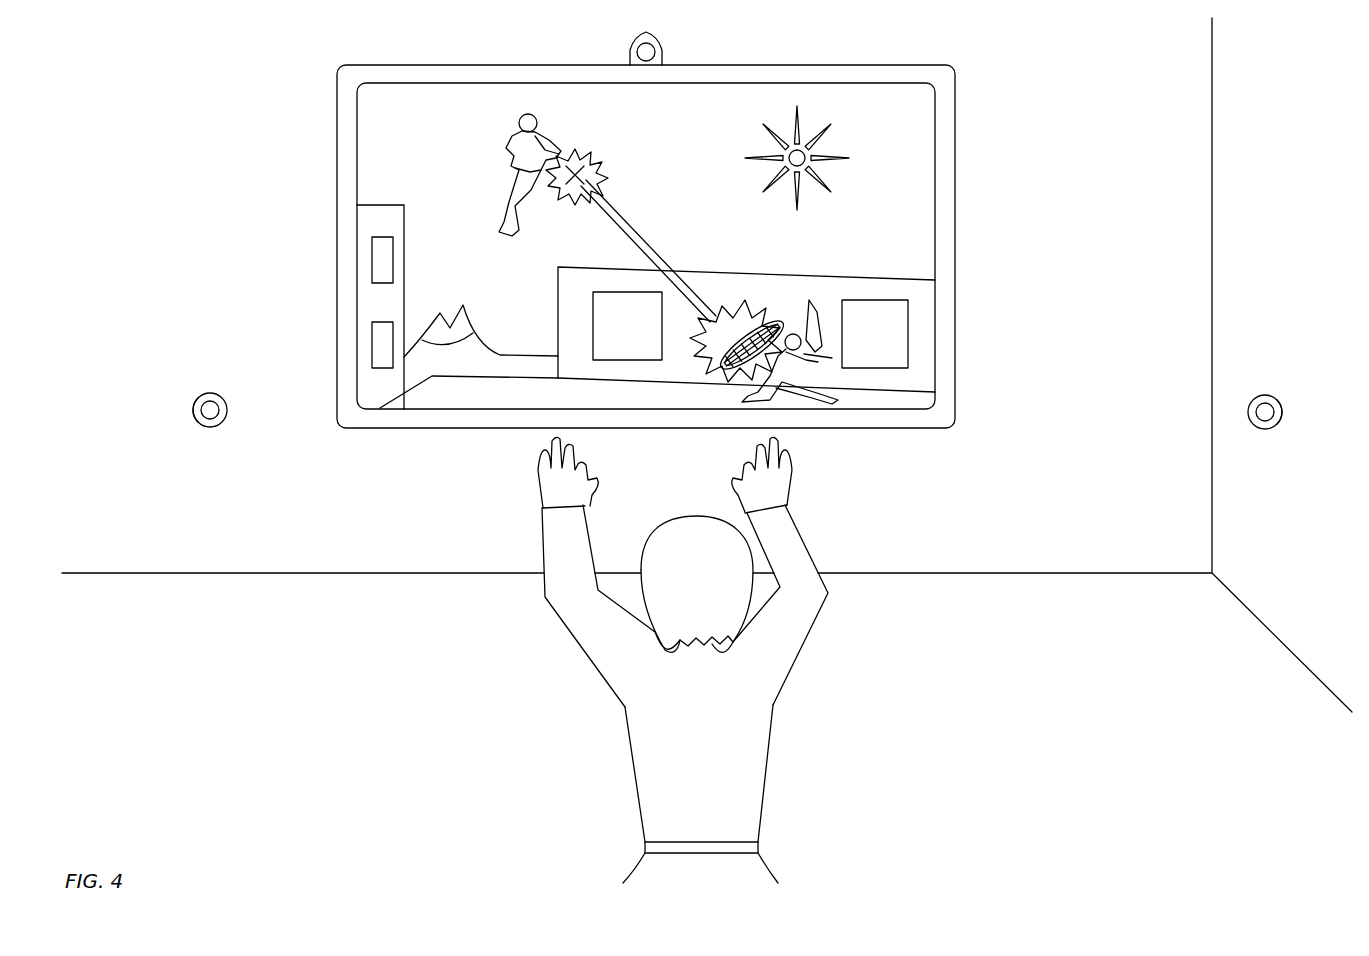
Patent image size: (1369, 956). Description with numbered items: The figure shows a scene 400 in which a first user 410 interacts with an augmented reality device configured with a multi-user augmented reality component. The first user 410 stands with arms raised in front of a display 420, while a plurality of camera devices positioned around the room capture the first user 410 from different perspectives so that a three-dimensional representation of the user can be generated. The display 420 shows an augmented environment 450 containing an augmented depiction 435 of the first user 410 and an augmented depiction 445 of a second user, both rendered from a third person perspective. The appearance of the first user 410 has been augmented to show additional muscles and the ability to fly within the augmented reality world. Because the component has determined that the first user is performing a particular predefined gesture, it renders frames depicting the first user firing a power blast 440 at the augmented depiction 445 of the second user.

The scene 400 is at (1083, 66).
The first user 410 is at (697, 516).
The display 420 is at (955, 322).
The augmented depiction of the first user 435 is at (517, 120).
The power blast 440 is at (643, 250).
The augmented depiction of the second user 445 is at (802, 330).
The augmented environment 450 is at (380, 131).